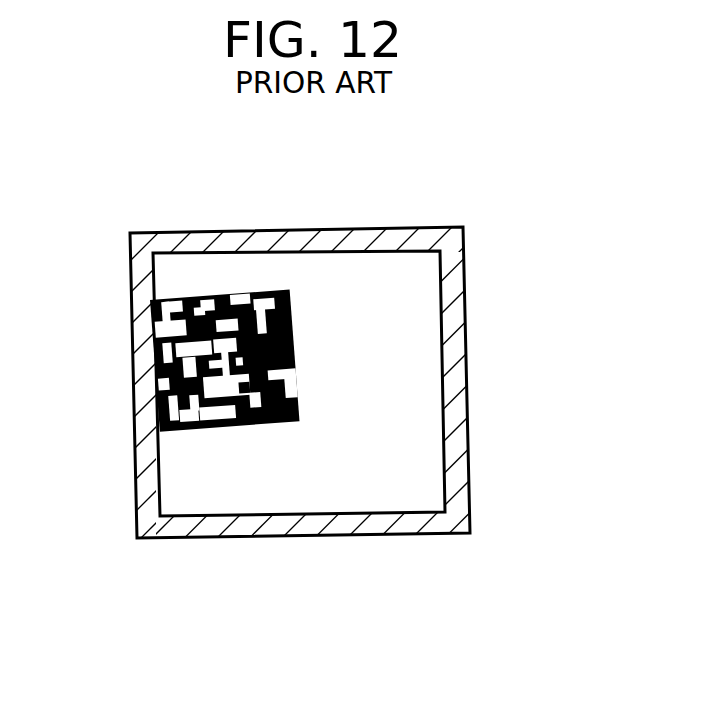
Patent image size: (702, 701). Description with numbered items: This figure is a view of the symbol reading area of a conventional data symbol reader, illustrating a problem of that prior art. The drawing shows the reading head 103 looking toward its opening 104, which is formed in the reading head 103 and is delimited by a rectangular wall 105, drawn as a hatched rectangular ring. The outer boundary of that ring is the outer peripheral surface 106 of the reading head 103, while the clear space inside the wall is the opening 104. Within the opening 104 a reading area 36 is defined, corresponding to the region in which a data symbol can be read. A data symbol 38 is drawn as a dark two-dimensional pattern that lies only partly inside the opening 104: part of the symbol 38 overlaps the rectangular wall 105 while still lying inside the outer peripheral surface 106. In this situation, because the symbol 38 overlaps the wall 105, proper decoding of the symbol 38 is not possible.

The reading area 36 is at (418, 491).
The data symbol 38 is at (292, 350).
The reading head 103 is at (268, 552).
The opening 104 is at (403, 368).
The rectangular wall 105 is at (257, 243).
The outer peripheral surface 106 is at (130, 320).